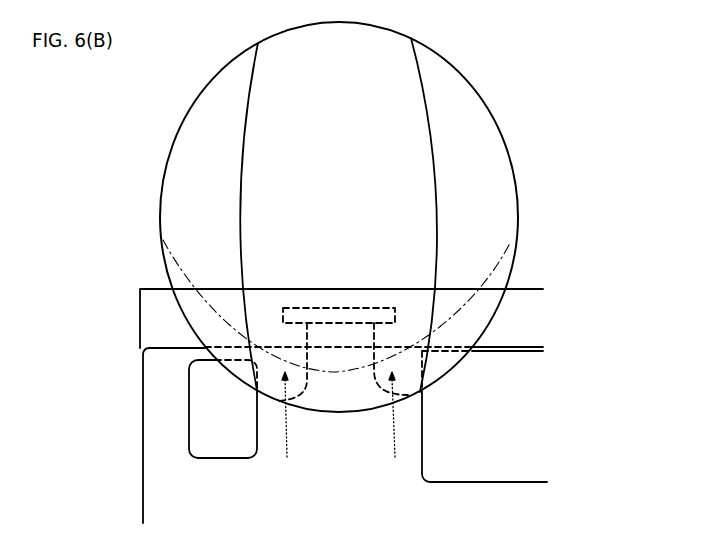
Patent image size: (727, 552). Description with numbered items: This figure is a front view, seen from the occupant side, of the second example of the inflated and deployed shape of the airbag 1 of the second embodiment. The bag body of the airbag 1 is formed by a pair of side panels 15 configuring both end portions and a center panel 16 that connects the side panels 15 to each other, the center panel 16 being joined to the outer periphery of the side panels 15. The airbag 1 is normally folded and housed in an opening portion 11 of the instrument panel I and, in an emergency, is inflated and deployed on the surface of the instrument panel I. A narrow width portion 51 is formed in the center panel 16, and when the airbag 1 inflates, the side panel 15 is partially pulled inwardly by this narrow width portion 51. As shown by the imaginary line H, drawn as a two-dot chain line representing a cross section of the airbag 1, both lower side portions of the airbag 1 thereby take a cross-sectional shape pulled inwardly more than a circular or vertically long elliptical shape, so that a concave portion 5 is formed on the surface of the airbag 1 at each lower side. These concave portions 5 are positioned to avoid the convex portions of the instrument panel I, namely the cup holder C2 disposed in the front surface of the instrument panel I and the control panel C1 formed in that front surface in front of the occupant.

The airbag 1 is at (483, 63).
The side panel 15 is at (214, 176).
The center panel 16 is at (346, 176).
The imaginary line H is at (190, 285).
The instrument panel I is at (140, 320).
The opening portion 11 is at (370, 307).
The narrow width portion 51 is at (307, 346).
The concave portion 5 is at (340, 426).
The cup holder C2 is at (212, 458).
The control panel C1 is at (472, 483).